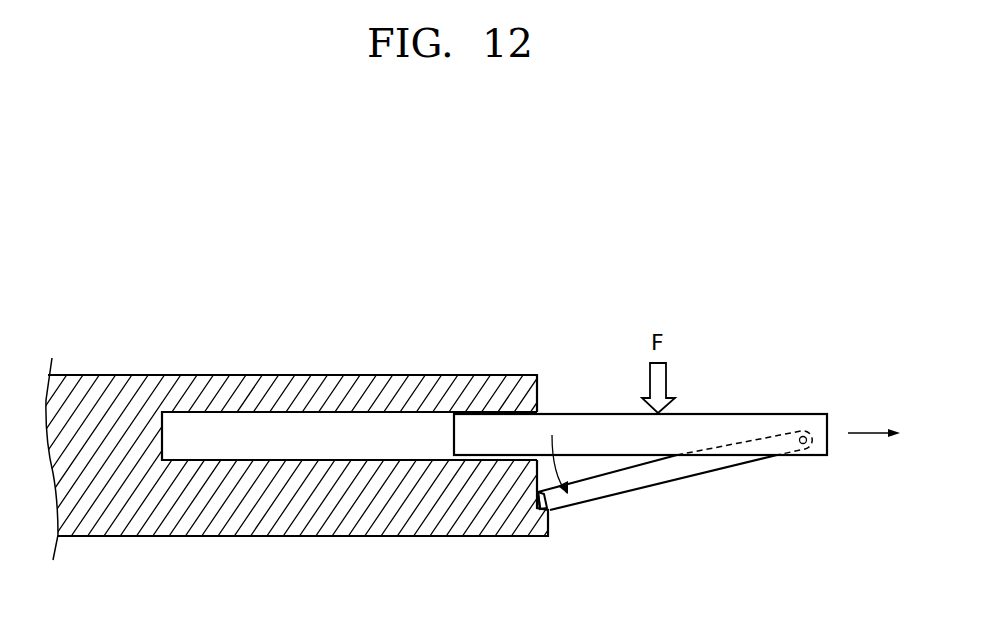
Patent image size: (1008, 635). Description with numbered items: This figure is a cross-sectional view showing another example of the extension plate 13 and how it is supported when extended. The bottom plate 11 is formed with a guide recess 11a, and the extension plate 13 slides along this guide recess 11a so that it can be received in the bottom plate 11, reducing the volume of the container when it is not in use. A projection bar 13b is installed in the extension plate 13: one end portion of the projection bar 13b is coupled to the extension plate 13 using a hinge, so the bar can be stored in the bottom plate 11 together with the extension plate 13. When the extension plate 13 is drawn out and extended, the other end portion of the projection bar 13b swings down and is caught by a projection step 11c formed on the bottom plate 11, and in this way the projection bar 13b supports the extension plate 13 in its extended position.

The bottom plate 11 is at (163, 536).
The guide recess 11a is at (237, 460).
The projection step 11c is at (566, 506).
The extension plate 13 is at (736, 423).
The projection bar 13b is at (670, 479).